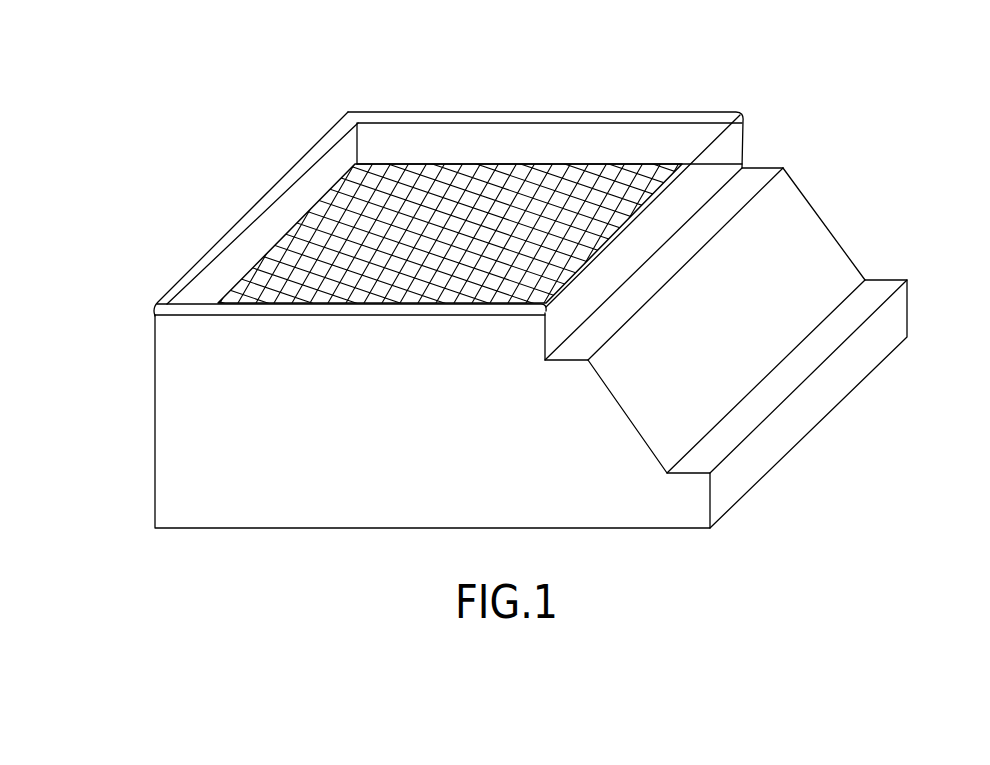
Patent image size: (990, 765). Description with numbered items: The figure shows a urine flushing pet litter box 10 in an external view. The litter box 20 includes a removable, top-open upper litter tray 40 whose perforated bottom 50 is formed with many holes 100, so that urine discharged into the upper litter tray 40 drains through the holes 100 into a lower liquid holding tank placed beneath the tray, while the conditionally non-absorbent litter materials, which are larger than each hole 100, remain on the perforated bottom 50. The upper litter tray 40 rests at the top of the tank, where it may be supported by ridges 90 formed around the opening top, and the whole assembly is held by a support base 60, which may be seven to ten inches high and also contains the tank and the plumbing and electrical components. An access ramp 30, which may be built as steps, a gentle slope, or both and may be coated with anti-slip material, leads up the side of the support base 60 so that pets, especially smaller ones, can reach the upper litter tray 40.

The urine flushing pet litter box 10 is at (760, 53).
The litter box 20 is at (743, 143).
The access ramp 30 is at (827, 225).
The upper litter tray 40 is at (217, 268).
The perforated bottom 50 is at (328, 235).
The support base 60 is at (155, 492).
The ridges 90 is at (236, 226).
The hole 100 is at (342, 170).